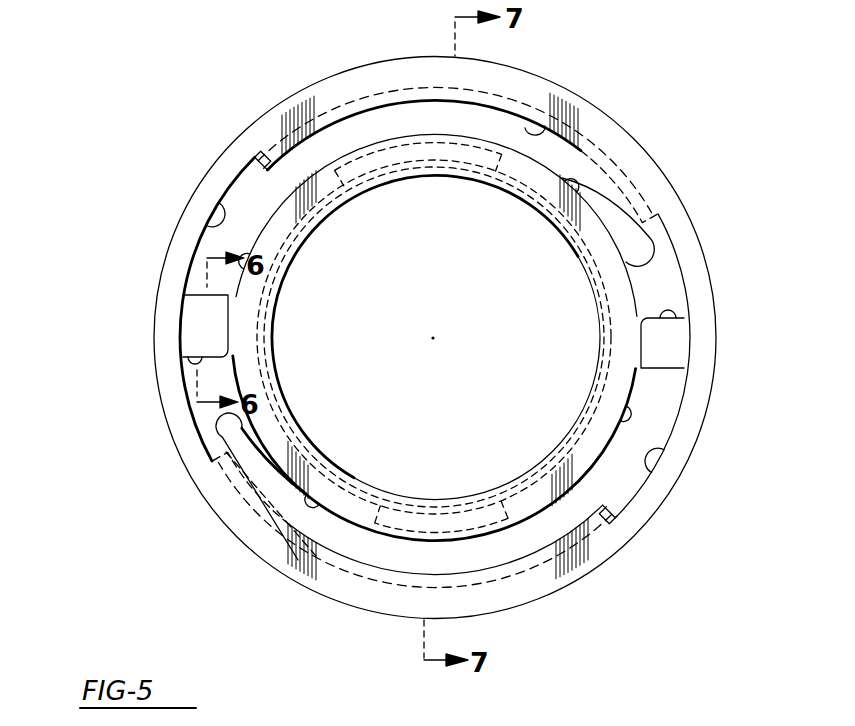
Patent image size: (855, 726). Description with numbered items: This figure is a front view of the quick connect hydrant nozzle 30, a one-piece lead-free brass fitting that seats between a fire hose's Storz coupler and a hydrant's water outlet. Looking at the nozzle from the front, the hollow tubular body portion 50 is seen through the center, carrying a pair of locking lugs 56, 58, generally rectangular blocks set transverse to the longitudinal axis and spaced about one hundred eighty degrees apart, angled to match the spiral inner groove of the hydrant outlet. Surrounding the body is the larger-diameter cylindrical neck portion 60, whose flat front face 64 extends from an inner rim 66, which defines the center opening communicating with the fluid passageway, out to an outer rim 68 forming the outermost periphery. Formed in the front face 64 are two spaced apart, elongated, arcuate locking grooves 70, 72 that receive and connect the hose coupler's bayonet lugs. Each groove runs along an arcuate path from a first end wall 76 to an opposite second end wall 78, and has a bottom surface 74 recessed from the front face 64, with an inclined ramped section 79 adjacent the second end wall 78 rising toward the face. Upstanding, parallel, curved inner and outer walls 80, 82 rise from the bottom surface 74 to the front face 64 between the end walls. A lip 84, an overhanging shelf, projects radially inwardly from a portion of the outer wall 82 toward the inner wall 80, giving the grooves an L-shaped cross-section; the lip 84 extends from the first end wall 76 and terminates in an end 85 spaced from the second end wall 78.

The quick connect hydrant nozzle 30 is at (372, 338).
The hollow tubular body portion 50 is at (434, 338).
The locking lug 56 is at (447, 163).
The locking lug 58 is at (470, 507).
The cylindrical neck portion 60 is at (453, 345).
The flat front face 64 is at (697, 257).
The inner rim 66 is at (280, 384).
The outer rim 68 is at (168, 431).
The locking groove 70 is at (444, 366).
The locking groove 72 is at (530, 129).
The bottom surface 74 is at (325, 141).
The first end wall 76 is at (622, 256).
The second end wall 78 is at (190, 357).
The ramped section 79 is at (200, 313).
The inner wall 80 is at (570, 189).
The outer wall 82 is at (210, 213).
The lip 84 is at (388, 96).
The end of lip 85 is at (254, 163).